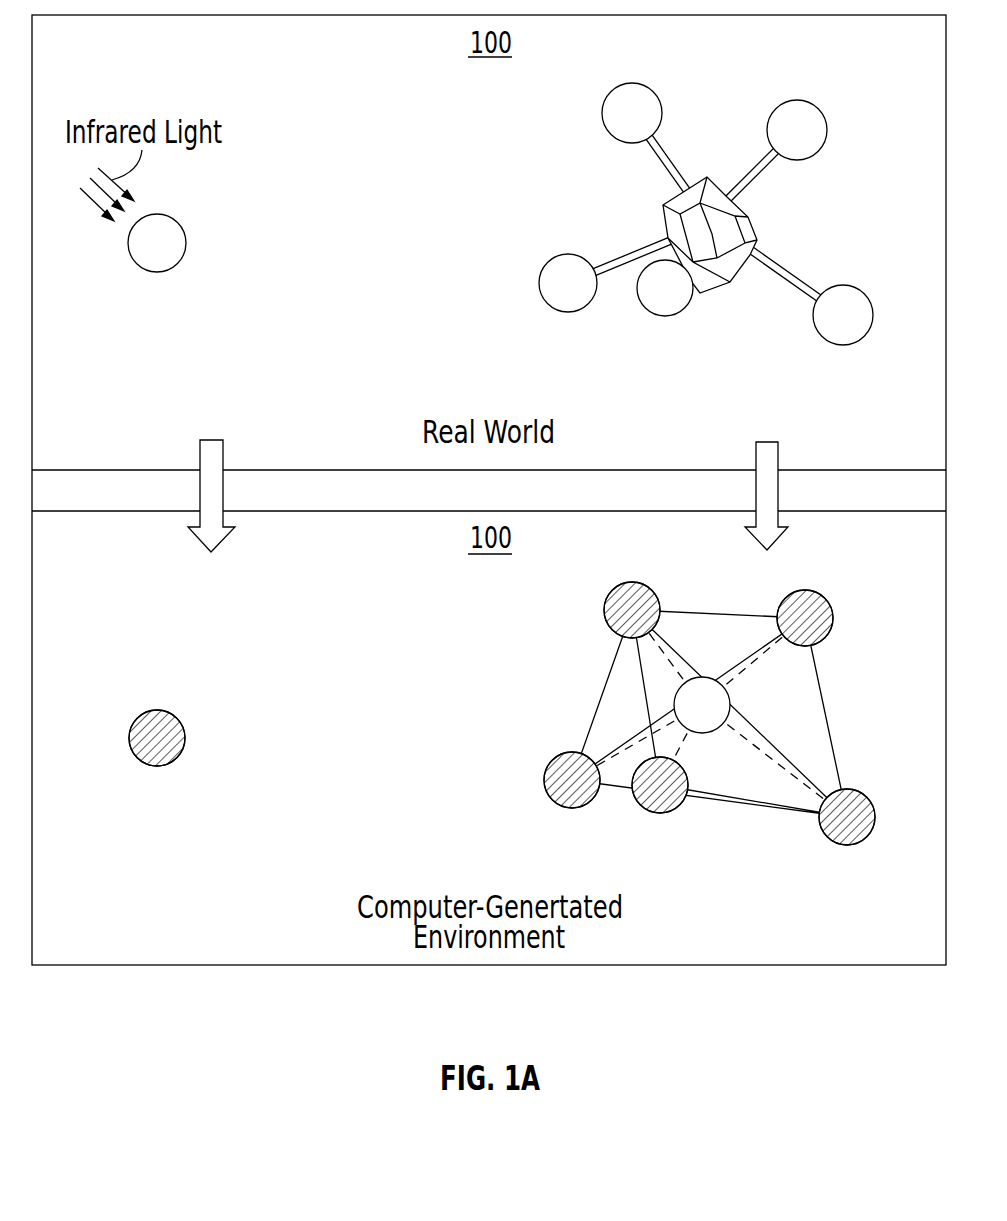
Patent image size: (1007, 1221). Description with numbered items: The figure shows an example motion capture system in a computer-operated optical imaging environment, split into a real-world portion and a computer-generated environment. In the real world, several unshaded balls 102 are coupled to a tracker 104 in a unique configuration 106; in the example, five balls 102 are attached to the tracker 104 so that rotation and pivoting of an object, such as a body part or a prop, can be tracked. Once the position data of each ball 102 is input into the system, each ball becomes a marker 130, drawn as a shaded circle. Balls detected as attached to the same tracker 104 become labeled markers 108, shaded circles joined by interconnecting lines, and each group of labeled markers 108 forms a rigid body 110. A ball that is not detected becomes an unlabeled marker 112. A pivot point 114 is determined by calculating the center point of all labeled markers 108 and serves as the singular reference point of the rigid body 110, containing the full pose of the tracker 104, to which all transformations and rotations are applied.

The ball 102 is at (178, 242).
The tracker 104 is at (748, 233).
The unique configuration 106 is at (666, 211).
The labeled marker 108 is at (645, 608).
The rigid body 110 is at (652, 713).
The unlabeled marker 112 is at (183, 738).
The pivot point 114 is at (705, 715).
The marker 130 is at (141, 751).